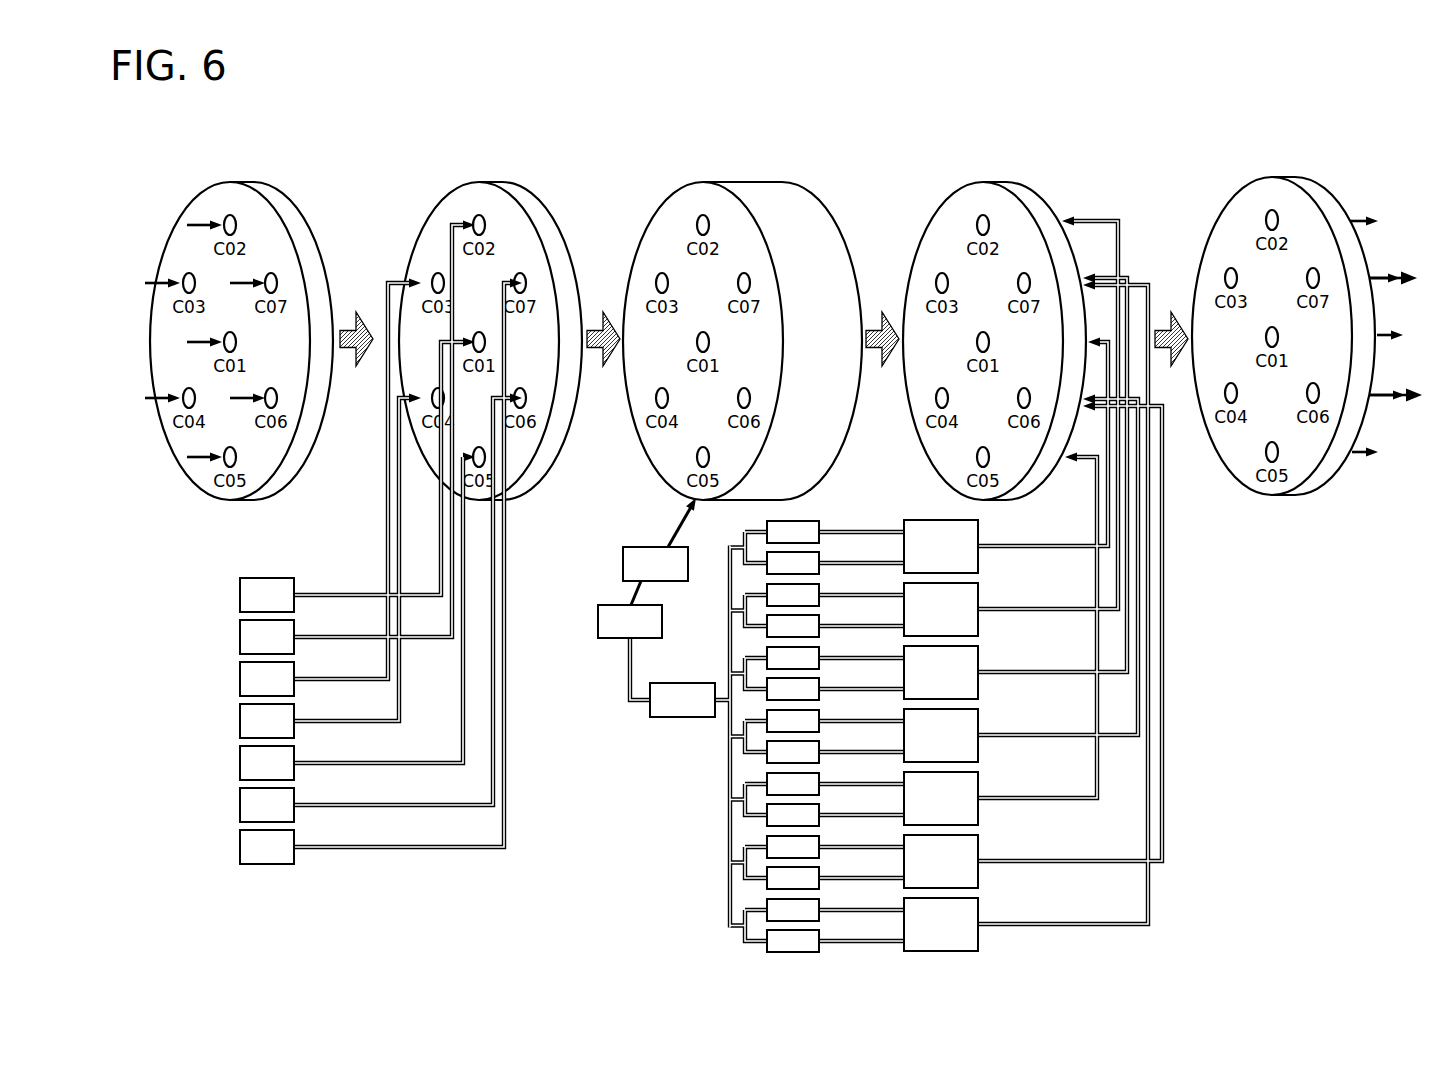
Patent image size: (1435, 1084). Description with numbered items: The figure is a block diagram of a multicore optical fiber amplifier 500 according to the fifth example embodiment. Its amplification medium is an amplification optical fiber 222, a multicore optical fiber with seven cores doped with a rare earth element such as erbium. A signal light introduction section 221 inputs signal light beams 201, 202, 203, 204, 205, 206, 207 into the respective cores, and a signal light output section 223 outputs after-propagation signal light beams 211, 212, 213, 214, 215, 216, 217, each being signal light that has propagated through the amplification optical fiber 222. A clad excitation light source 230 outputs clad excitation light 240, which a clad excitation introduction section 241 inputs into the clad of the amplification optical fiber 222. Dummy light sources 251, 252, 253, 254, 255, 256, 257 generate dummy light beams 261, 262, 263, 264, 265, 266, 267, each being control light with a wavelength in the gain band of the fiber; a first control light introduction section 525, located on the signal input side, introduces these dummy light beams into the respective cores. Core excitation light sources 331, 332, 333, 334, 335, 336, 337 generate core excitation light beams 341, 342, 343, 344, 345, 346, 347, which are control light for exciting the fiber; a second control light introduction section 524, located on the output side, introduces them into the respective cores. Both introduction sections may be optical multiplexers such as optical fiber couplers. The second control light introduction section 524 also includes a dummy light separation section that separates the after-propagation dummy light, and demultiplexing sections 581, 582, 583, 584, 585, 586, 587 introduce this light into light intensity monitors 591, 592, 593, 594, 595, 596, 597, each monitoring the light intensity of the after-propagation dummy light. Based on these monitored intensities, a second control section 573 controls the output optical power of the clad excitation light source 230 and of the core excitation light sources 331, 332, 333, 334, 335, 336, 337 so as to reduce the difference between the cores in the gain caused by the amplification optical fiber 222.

The signal light beam 201 is at (197, 342).
The signal light beam 202 is at (200, 225).
The signal light beam 203 is at (167, 280).
The signal light beam 204 is at (168, 402).
The signal light beam 205 is at (197, 462).
The signal light beam 206 is at (242, 402).
The signal light beam 207 is at (247, 282).
The after-propagation signal light beam 211 is at (1395, 332).
The after-propagation signal light beam 212 is at (1357, 216).
The after-propagation signal light beam 213 is at (1377, 268).
The after-propagation signal light beam 214 is at (1393, 390).
The after-propagation signal light beam 215 is at (1363, 460).
The after-propagation signal light beam 216 is at (1402, 405).
The after-propagation signal light beam 217 is at (1400, 278).
The signal light introduction section 221 is at (258, 182).
The amplification optical fiber 222 is at (746, 183).
The signal light output section 223 is at (1293, 178).
The clad excitation light source 230 is at (605, 640).
The clad excitation light 240 is at (670, 533).
The clad excitation introduction section 241 is at (622, 563).
The dummy light source 251 is at (238, 595).
The dummy light source 252 is at (238, 637).
The dummy light source 253 is at (238, 679).
The dummy light source 254 is at (238, 721).
The dummy light source 255 is at (238, 763).
The dummy light source 256 is at (238, 805).
The dummy light source 257 is at (238, 847).
The dummy light beam 261 is at (470, 342).
The dummy light beam 262 is at (457, 223).
The dummy light beam 263 is at (398, 282).
The dummy light beam 264 is at (420, 398).
The dummy light beam 265 is at (470, 462).
The dummy light beam 266 is at (512, 405).
The dummy light beam 267 is at (510, 282).
The core excitation light source 331 is at (822, 523).
The core excitation light source 332 is at (822, 586).
The core excitation light source 333 is at (822, 649).
The core excitation light source 334 is at (822, 712).
The core excitation light source 335 is at (822, 775).
The core excitation light source 336 is at (822, 838).
The core excitation light source 337 is at (822, 901).
The core excitation light beam 341 is at (1100, 342).
The core excitation light beam 342 is at (1083, 216).
The core excitation light beam 343 is at (1100, 275).
The core excitation light beam 344 is at (1103, 400).
The core excitation light beam 345 is at (1070, 462).
The core excitation light beam 346 is at (1103, 407).
The core excitation light beam 347 is at (1145, 275).
The multicore optical fiber amplifier 500 is at (885, 134).
The second control light introduction section 524 is at (1008, 183).
The first control light introduction section 525 is at (505, 182).
The second control section 573 is at (695, 682).
The demultiplexing section 581 is at (982, 537).
The demultiplexing section 582 is at (982, 600).
The demultiplexing section 583 is at (982, 663).
The demultiplexing section 584 is at (982, 726).
The demultiplexing section 585 is at (982, 789).
The demultiplexing section 586 is at (982, 852).
The demultiplexing section 587 is at (982, 915).
The light intensity monitor 591 is at (822, 554).
The light intensity monitor 592 is at (822, 617).
The light intensity monitor 593 is at (822, 680).
The light intensity monitor 594 is at (822, 743).
The light intensity monitor 595 is at (822, 806).
The light intensity monitor 596 is at (822, 869).
The light intensity monitor 597 is at (822, 932).